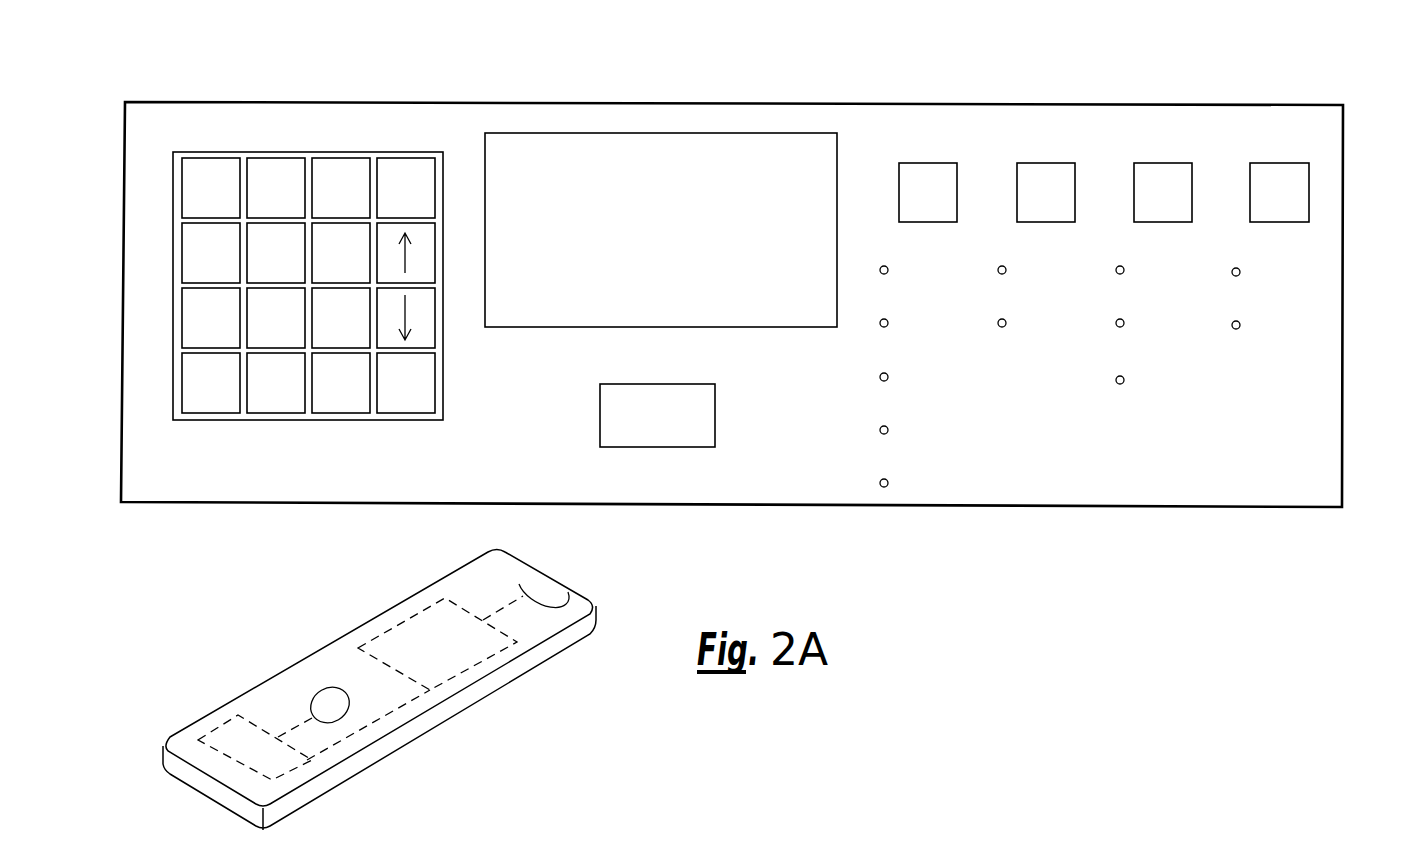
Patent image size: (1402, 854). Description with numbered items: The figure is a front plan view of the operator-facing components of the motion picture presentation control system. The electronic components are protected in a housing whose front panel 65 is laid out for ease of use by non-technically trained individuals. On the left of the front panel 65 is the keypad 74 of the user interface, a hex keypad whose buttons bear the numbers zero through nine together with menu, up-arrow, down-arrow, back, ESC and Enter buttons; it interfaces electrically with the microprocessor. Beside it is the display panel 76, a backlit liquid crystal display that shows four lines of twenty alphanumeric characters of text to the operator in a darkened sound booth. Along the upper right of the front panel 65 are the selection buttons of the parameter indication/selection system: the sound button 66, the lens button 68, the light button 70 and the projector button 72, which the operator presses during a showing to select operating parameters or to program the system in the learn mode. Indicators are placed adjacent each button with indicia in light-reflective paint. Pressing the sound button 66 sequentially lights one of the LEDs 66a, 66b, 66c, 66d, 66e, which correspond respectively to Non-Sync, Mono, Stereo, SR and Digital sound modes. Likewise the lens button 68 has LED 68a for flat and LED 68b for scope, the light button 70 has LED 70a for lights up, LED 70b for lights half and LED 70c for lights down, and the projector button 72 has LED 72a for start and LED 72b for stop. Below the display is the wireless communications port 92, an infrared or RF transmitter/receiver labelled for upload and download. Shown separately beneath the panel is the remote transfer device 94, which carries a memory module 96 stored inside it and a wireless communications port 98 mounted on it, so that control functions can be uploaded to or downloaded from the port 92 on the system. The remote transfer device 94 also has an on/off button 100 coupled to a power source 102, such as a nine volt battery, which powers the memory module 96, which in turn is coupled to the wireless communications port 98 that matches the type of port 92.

The front panel 65 is at (1089, 493).
The keypad 74 is at (235, 85).
The display panel 76 is at (592, 133).
The sound button 66 is at (957, 172).
The lens button 68 is at (1075, 172).
The light button 70 is at (1192, 172).
The projector button 72 is at (1309, 192).
The LED 66a is at (880, 269).
The LED 66b is at (880, 322).
The LED 66c is at (880, 377).
The LED 66d is at (880, 430).
The LED 66e is at (880, 483).
The LED 68a is at (999, 266).
The LED 68b is at (1000, 327).
The LED 70a is at (1117, 266).
The LED 70b is at (1116, 327).
The LED 70c is at (1121, 384).
The LED 72a is at (1233, 268).
The LED 72b is at (1234, 329).
The wireless communications port 92 is at (600, 412).
The remote transfer device 94 is at (318, 770).
The memory module 96 is at (467, 660).
The wireless communications port 98 is at (553, 578).
The on/off button 100 is at (322, 688).
The power source 102 is at (222, 730).